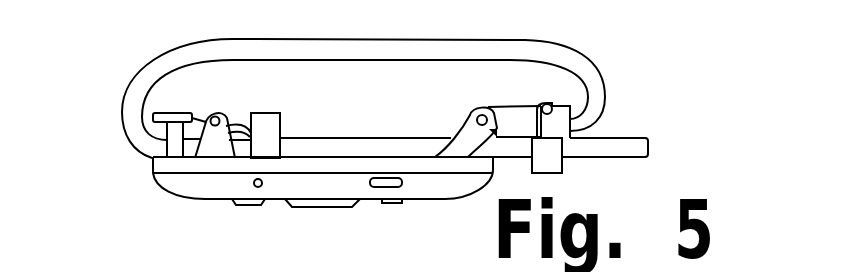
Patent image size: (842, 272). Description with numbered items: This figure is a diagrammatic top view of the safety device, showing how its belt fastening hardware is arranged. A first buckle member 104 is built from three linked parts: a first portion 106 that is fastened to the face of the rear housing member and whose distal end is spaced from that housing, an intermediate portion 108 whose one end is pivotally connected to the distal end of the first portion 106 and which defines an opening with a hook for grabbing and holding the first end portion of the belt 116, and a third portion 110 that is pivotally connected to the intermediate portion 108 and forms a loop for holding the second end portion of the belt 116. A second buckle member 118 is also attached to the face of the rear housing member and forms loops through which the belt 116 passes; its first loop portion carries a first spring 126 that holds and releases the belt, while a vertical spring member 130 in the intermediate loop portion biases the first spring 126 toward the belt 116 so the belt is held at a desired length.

The first buckle member 104 is at (608, 121).
The first portion 106 is at (463, 145).
The intermediate portion 108 is at (522, 115).
The third portion 110 is at (548, 167).
The belt 116 is at (217, 55).
The second buckle member 118 is at (121, 189).
The first spring 126 is at (239, 130).
The vertical spring member 130 is at (153, 117).